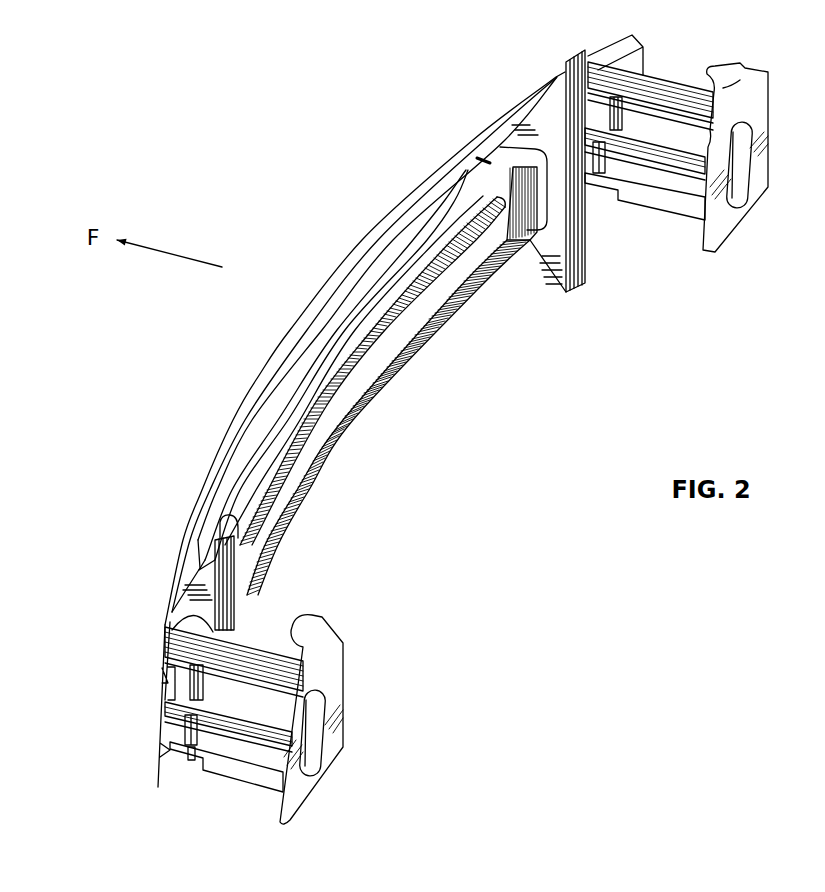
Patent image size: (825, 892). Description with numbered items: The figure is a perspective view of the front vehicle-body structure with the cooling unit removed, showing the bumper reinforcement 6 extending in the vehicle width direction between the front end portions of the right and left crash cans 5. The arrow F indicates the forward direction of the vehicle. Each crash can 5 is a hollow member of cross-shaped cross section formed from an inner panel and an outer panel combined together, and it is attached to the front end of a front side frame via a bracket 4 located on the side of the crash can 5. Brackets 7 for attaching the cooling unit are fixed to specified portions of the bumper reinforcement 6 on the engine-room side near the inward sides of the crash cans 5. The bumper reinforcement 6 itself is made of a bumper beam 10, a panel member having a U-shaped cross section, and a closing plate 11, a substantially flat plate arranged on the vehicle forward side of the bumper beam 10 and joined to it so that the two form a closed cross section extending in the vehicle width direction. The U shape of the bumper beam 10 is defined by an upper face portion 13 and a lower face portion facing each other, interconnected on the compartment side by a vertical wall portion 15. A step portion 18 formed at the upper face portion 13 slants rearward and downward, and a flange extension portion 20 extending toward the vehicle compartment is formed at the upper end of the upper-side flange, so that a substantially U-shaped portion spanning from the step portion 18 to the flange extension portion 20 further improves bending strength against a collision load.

The bracket 4 is at (762, 93).
The crash can 5 is at (671, 78).
The bumper reinforcement 6 is at (348, 232).
The bracket 7 is at (582, 234).
The bumper beam 10 is at (407, 347).
The closing plate 11 is at (278, 346).
The upper face portion 13 is at (288, 417).
The vertical wall portion 15 is at (367, 393).
The step portion 18 is at (383, 281).
The flange extension portion 20 is at (315, 308).